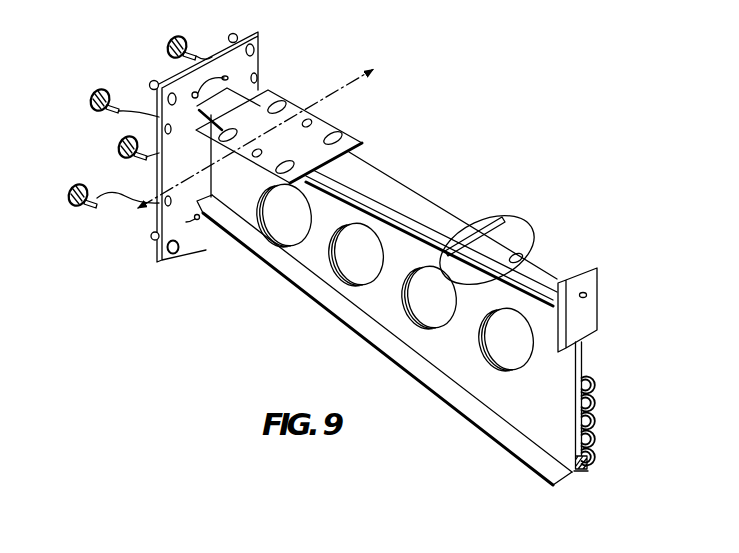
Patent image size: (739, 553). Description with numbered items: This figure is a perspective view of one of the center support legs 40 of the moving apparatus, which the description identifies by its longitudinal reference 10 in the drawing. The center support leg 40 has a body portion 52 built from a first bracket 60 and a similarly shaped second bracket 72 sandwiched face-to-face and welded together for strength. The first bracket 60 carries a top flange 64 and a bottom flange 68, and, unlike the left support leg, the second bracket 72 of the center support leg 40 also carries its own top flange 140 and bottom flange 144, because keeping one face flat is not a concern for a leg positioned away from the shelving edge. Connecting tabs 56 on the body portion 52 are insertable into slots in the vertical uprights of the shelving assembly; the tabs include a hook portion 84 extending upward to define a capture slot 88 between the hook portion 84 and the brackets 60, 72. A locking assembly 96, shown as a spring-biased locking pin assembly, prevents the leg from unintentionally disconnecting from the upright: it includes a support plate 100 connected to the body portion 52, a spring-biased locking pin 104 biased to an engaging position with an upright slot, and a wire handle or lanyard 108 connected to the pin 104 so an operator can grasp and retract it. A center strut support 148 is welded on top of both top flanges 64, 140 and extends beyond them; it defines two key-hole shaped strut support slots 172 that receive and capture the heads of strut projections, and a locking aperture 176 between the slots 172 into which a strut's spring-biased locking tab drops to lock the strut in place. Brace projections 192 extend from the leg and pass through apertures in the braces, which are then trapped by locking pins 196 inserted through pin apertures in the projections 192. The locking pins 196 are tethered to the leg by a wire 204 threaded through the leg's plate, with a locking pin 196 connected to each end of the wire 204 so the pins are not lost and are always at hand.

The longitudinal axis of apparatus 10 is at (378, 73).
The center support leg 40 is at (531, 129).
The body portion 52 is at (374, 303).
The connecting tabs 56 is at (601, 414).
The first bracket 60 is at (478, 390).
The top flange 64 is at (398, 217).
The bottom flange 68 is at (545, 471).
The second bracket 72 is at (590, 356).
The hook portion 84 is at (600, 386).
The capture slot 88 is at (580, 424).
The locking assembly 96 is at (583, 263).
The support plate 100 is at (587, 310).
The locking pin 104 is at (523, 256).
The wire handle or lanyard 108 is at (485, 220).
The top flange 140 is at (385, 177).
The bottom flange 144 is at (586, 472).
The center strut support 148 is at (246, 228).
The strut support slots 172 is at (232, 133).
The locking aperture 176 is at (260, 151).
The brace projections 192 is at (150, 83).
The locking pins 196 is at (78, 186).
The wire 204 is at (110, 200).